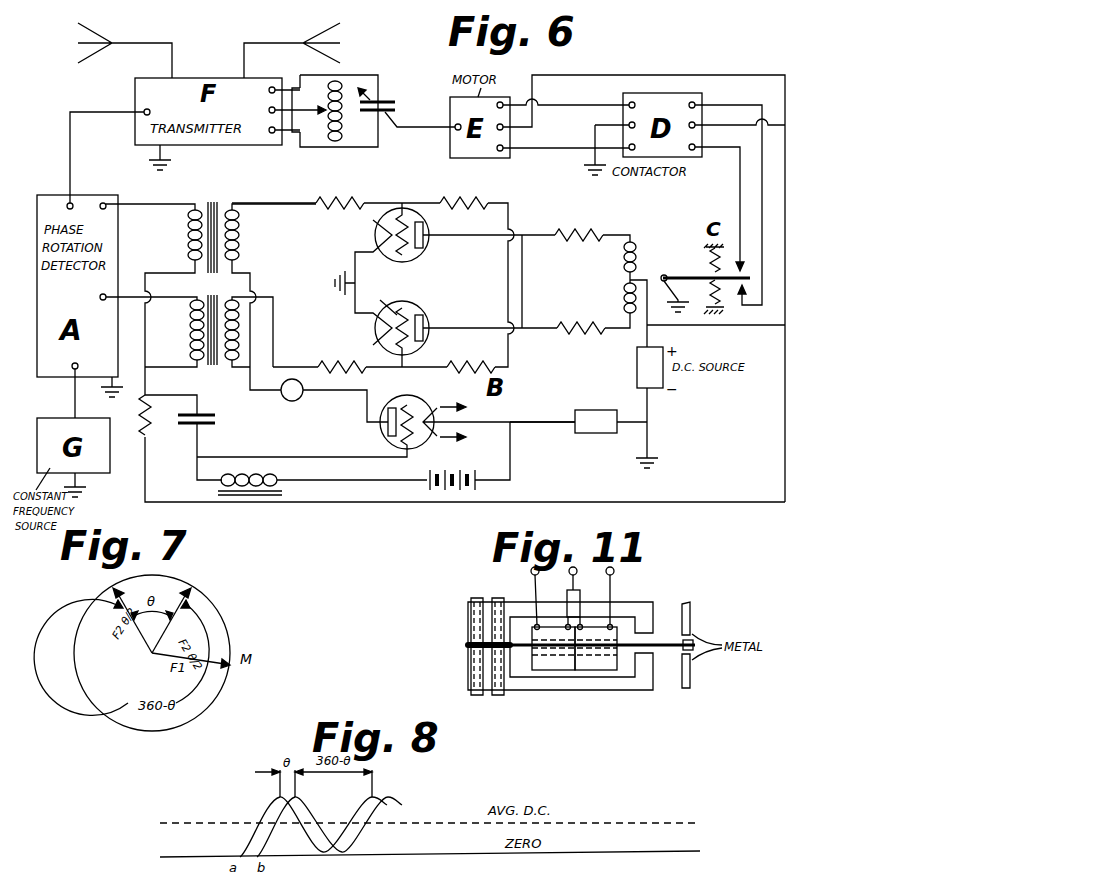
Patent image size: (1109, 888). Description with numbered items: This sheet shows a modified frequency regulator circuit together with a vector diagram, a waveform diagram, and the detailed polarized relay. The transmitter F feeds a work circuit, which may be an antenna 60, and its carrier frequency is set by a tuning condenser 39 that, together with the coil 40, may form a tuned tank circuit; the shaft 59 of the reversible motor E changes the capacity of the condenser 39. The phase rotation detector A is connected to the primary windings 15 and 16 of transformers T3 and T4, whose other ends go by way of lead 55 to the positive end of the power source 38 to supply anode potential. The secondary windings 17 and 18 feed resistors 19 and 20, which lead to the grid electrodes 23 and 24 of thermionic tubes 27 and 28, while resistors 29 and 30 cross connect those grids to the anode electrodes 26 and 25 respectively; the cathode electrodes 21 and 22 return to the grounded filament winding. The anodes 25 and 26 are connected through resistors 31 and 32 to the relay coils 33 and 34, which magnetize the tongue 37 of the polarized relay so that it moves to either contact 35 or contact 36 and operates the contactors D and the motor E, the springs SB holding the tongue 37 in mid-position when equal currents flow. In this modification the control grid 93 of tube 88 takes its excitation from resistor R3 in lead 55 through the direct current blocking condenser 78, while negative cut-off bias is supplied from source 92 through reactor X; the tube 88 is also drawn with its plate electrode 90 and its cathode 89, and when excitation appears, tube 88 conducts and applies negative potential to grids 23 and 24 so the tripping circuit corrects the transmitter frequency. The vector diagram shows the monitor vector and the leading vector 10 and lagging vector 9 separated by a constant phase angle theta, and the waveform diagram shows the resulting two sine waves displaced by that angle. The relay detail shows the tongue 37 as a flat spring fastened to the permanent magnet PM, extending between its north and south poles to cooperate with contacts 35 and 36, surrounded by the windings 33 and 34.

In FIG. 6, the work circuit 60 is at (183, 36).
In FIG. 6, the coil 40 is at (326, 138).
In FIG. 6, the tuning condenser 39 is at (388, 100).
In FIG. 6, the shaft 59 is at (415, 128).
In FIG. 6, the contact 36 is at (729, 209).
In FIG. 11, the contact 36 is at (692, 620).
In FIG. 6, the contact 35 is at (750, 294).
In FIG. 11, the contact 35 is at (692, 673).
In FIG. 6, the tongue 37 is at (679, 274).
In FIG. 11, the tongue 37 is at (624, 644).
In FIG. 6, the springs SB is at (707, 262).
In FIG. 11, the springs SB is at (528, 645).
In FIG. 6, the resistor 20 is at (335, 199).
In FIG. 6, the resistor 30 is at (462, 199).
In FIG. 6, the resistor 19 is at (346, 362).
In FIG. 6, the resistor 29 is at (458, 364).
In FIG. 6, the cathode electrode 22 is at (373, 236).
In FIG. 6, the grid electrode 24 is at (409, 258).
In FIG. 6, the anode electrode 26 is at (425, 230).
In FIG. 6, the thermionic tube 28 is at (428, 246).
In FIG. 6, the cathode electrode 21 is at (373, 329).
In FIG. 6, the thermionic tube 27 is at (412, 312).
In FIG. 6, the grid electrode 23 is at (386, 300).
In FIG. 6, the anode electrode 25 is at (425, 315).
In FIG. 6, the resistor 32 is at (578, 231).
In FIG. 6, the resistor 31 is at (570, 337).
In FIG. 6, the relay coil 34 is at (626, 258).
In FIG. 11, the relay coil 34 is at (590, 628).
In FIG. 6, the relay coil 33 is at (626, 298).
In FIG. 11, the relay coil 33 is at (548, 628).
In FIG. 6, the power source 38 is at (637, 378).
In FIG. 6, the transformer T4 is at (212, 202).
In FIG. 6, the primary winding 16 is at (190, 223).
In FIG. 6, the secondary winding 18 is at (238, 256).
In FIG. 6, the transformer T3 is at (218, 366).
In FIG. 6, the primary winding 15 is at (155, 332).
In FIG. 6, the secondary winding 17 is at (241, 352).
In FIG. 6, the resistor R3 is at (145, 415).
In FIG. 6, the lead 55 is at (146, 478).
In FIG. 6, the direct current blocking condenser 78 is at (183, 437).
In FIG. 6, the reactor X is at (267, 477).
In FIG. 6, the source 92 is at (440, 470).
In FIG. 6, the tube 88 is at (392, 402).
In FIG. 6, the plate 90 is at (388, 430).
In FIG. 6, the control grid 93 is at (410, 403).
In FIG. 6, the cathode 89 is at (440, 405).
In FIG. 7, the vector 10 is at (118, 612).
In FIG. 7, the vector 9 is at (182, 611).
In FIG. 11, the permanent magnet PM is at (518, 602).